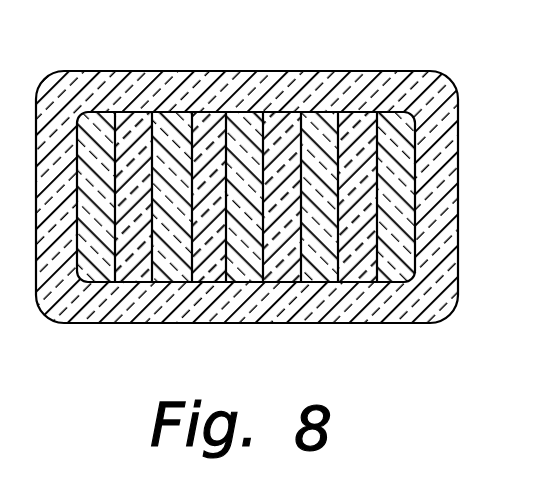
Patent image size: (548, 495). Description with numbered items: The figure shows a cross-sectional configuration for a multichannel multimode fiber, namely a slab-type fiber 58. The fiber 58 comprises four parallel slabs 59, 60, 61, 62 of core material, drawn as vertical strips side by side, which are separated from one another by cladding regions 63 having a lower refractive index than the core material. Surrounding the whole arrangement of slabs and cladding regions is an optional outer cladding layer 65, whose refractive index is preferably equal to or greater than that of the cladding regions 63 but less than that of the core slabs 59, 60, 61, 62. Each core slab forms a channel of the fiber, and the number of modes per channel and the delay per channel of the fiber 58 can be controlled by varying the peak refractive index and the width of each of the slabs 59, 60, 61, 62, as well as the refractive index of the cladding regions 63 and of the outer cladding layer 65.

The slab-type fiber 58 is at (95, 72).
The outer cladding layer 65 is at (124, 82).
The slab of core material 59 is at (143, 127).
The slab of core material 60 is at (214, 133).
The slab of core material 61 is at (286, 133).
The slab of core material 62 is at (357, 112).
The cladding regions 63 is at (163, 270).